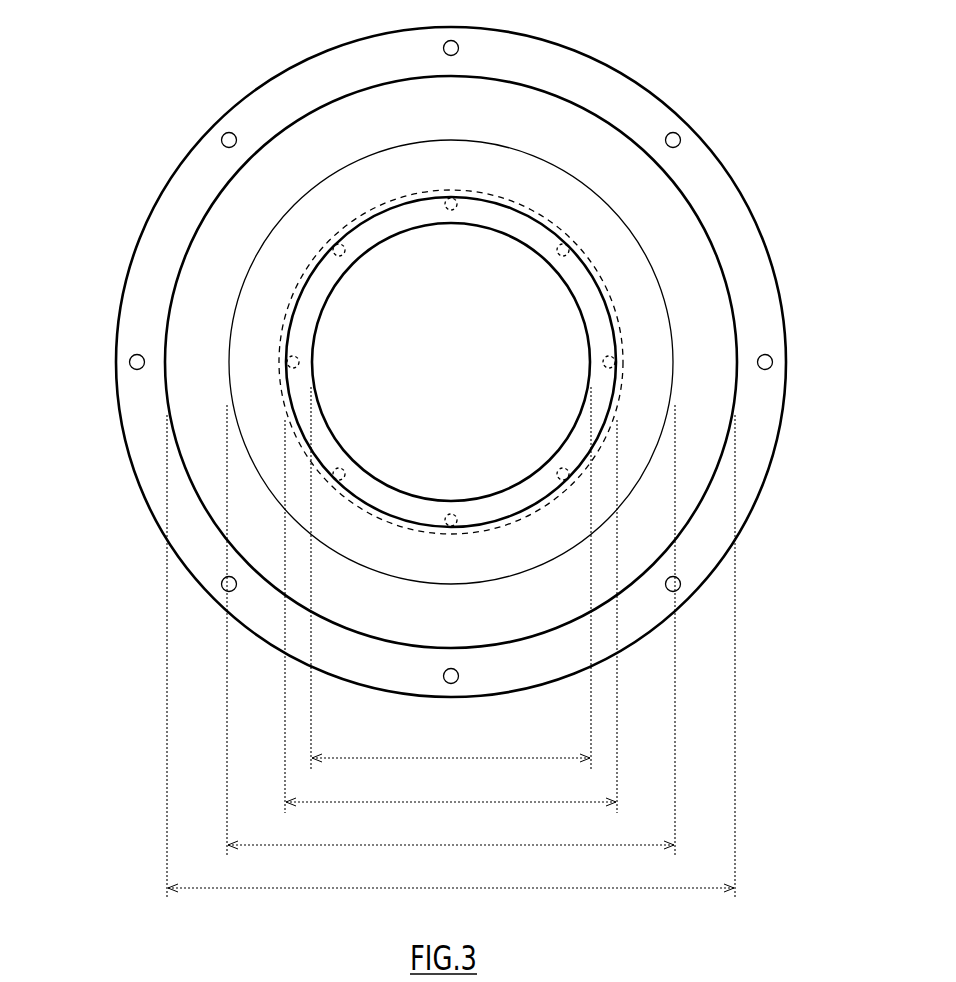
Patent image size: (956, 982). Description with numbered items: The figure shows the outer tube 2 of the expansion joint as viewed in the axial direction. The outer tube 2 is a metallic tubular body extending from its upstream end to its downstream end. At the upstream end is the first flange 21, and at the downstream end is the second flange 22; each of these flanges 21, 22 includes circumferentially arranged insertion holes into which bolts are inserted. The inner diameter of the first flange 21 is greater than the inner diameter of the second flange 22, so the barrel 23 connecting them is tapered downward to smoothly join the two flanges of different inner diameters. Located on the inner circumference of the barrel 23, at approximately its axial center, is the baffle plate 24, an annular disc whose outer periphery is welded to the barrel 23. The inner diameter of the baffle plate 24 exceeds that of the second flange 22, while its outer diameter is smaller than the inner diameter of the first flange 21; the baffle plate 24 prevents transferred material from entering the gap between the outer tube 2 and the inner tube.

The outer tube 2 is at (104, 188).
The first flange 21 is at (247, 96).
The second flange 22 is at (610, 287).
The barrel 23 is at (347, 273).
The baffle plate 24 is at (291, 322).